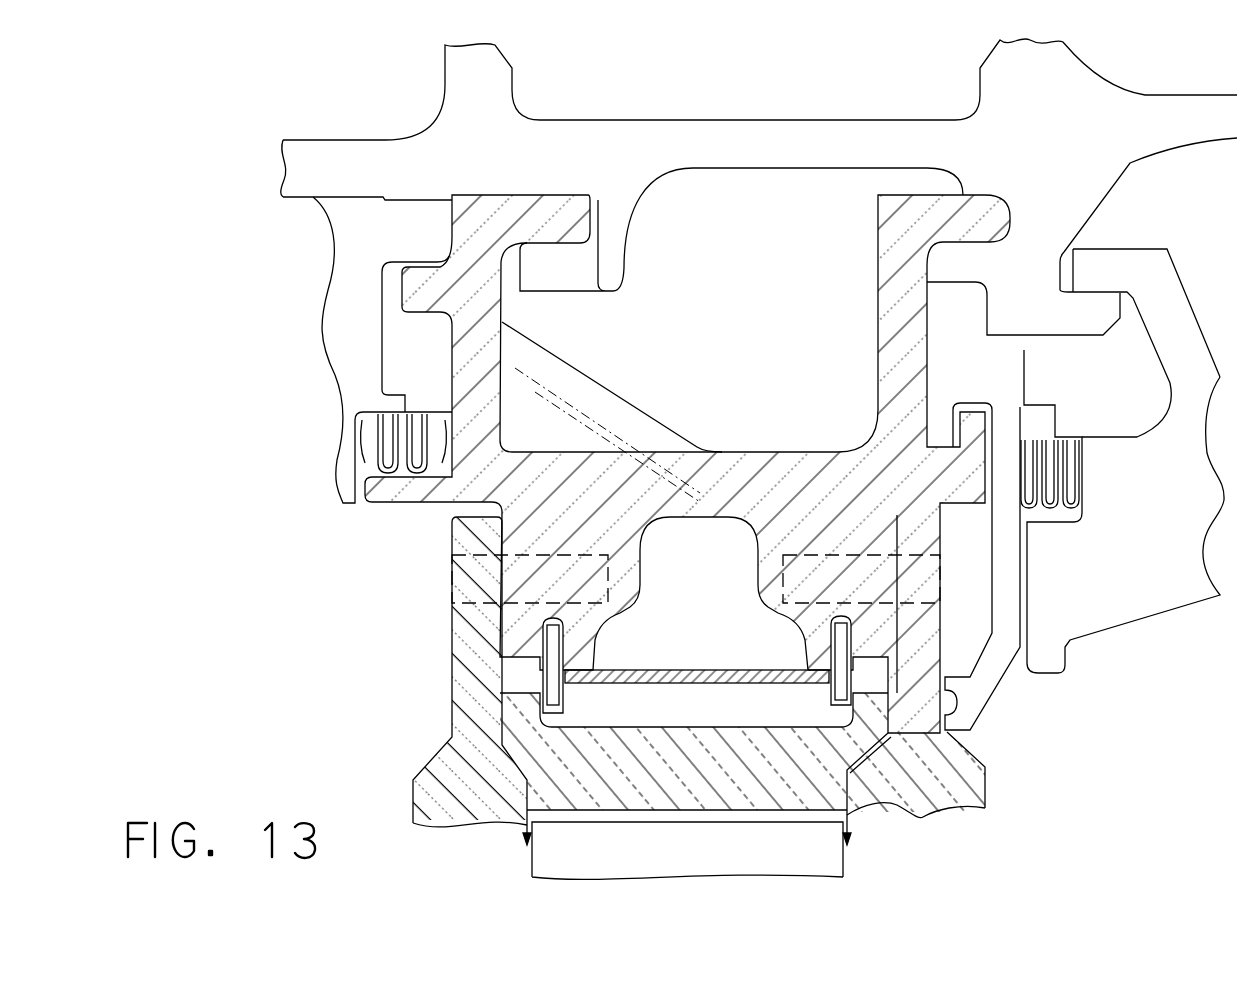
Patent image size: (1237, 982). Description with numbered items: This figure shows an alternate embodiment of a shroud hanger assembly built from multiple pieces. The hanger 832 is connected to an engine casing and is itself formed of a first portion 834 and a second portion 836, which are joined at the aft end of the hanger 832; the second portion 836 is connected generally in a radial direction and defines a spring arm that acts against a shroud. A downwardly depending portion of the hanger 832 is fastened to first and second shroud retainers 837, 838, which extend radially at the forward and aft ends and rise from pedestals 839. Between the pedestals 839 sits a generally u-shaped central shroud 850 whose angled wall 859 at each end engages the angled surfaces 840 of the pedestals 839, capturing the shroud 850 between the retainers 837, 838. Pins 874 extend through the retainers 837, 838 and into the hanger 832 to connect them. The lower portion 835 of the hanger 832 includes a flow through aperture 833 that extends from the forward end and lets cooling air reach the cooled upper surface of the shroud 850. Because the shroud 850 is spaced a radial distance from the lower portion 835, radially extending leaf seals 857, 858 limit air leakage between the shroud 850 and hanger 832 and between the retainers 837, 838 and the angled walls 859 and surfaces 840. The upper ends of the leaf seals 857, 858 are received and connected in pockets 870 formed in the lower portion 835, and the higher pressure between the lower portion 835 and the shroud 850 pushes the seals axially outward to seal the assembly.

The hanger 832 is at (678, 320).
The flow through aperture 833 is at (638, 409).
The first portion 834 is at (870, 328).
The lower portion of the hanger 835 is at (873, 633).
The second portion 836 is at (1040, 398).
The first shroud retainer 837 is at (470, 663).
The second shroud retainer 838 is at (953, 811).
The pedestals 839 is at (445, 813).
The angled surfaces 840 is at (494, 785).
The shroud 850 is at (600, 778).
The leaf seal 857 is at (562, 687).
The leaf seal 858 is at (831, 685).
The angled wall 859 is at (500, 783).
The pockets 870 is at (565, 636).
The pins 874 is at (545, 586).